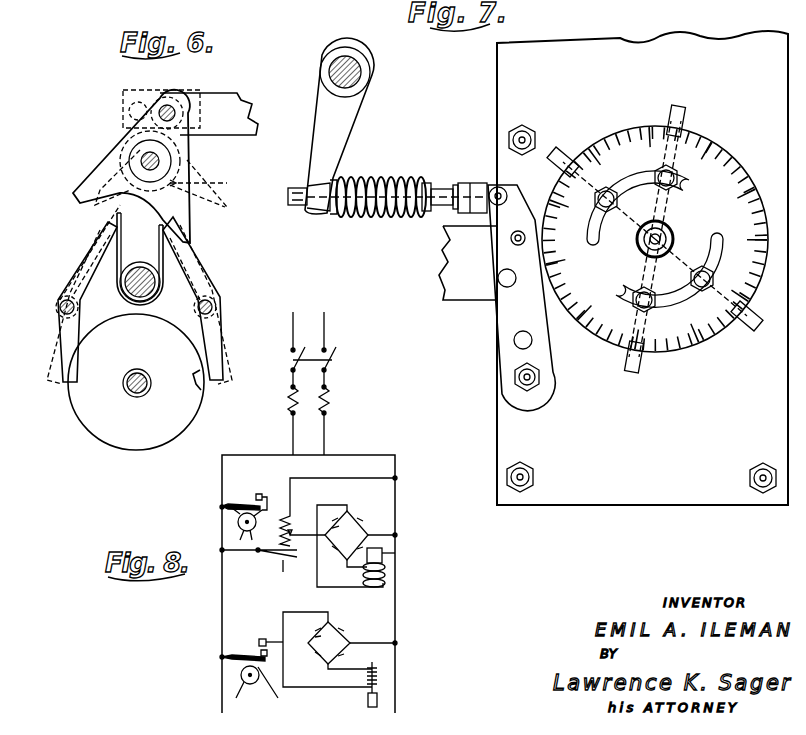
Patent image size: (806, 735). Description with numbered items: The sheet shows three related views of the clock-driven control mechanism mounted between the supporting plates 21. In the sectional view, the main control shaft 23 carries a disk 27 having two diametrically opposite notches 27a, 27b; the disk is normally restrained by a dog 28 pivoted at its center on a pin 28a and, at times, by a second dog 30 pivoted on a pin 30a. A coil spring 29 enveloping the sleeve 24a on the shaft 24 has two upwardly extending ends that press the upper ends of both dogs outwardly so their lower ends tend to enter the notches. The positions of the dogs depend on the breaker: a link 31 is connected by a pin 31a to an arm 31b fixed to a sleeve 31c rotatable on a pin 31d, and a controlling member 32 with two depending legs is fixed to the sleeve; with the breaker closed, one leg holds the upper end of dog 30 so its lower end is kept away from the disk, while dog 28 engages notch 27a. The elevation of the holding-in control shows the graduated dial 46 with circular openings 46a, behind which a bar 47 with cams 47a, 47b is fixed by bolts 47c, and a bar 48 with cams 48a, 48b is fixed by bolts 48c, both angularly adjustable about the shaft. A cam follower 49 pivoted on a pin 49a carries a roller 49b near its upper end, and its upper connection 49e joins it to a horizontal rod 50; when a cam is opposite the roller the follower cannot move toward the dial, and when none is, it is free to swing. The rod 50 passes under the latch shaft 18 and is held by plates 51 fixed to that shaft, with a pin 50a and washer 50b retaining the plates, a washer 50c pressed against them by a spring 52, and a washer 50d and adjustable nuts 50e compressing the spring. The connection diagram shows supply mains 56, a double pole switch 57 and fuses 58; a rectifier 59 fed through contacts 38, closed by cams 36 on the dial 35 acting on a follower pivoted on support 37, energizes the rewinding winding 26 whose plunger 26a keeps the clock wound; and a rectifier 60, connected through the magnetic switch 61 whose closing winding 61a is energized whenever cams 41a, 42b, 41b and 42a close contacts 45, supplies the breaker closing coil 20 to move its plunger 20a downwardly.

In FIG. 7, the latch shaft 18 is at (360, 74).
In FIG. 8, the closing coil 20 is at (383, 590).
In FIG. 8, the plunger 20a is at (388, 550).
In FIG. 7, the supporting plate 21 is at (732, 48).
In FIG. 6, the control shaft 23 is at (144, 372).
In FIG. 7, the control shaft 23 is at (666, 228).
In FIG. 6, the shaft 24 is at (154, 290).
In FIG. 6, the sleeve 24a is at (138, 300).
In FIG. 8, the solenoid winding 26 is at (383, 662).
In FIG. 8, the plunger 26a is at (368, 700).
In FIG. 6, the disk 27 is at (136, 382).
In FIG. 6, the notch 27a is at (70, 380).
In FIG. 6, the notch 27b is at (194, 375).
In FIG. 6, the dog 28 is at (88, 254).
In FIG. 6, the pin 28a is at (57, 307).
In FIG. 6, the coil spring 29 is at (120, 272).
In FIG. 6, the dog 30 is at (196, 272).
In FIG. 6, the pin 30a is at (216, 306).
In FIG. 6, the link 31 is at (240, 97).
In FIG. 6, the pin 31a is at (172, 108).
In FIG. 6, the arm 31b is at (187, 138).
In FIG. 6, the sleeve 31c is at (209, 186).
In FIG. 6, the pin 31d is at (160, 162).
In FIG. 6, the controlling member 32 is at (106, 175).
In FIG. 8, the dial 35 is at (247, 532).
In FIG. 8, the cam 36 is at (255, 691).
In FIG. 7, the support 37 is at (275, 13).
In FIG. 8, the contacts 38 is at (258, 650).
In FIG. 8, the cam 41a is at (222, 508).
In FIG. 8, the cam 41b is at (256, 552).
In FIG. 8, the cam 42a is at (240, 522).
In FIG. 8, the cam 42b is at (275, 500).
In FIG. 8, the contacts 45 is at (254, 500).
In FIG. 7, the dial 46 is at (738, 158).
In FIG. 7, the circular openings 46a is at (600, 234).
In FIG. 7, the bar 47 is at (694, 252).
In FIG. 7, the cam 47a is at (562, 152).
In FIG. 7, the cam 47b is at (750, 326).
In FIG. 7, the bolts 47c is at (622, 190).
In FIG. 7, the bar 48 is at (630, 280).
In FIG. 7, the cam 48a is at (680, 118).
In FIG. 7, the cam 48b is at (634, 366).
In FIG. 7, the bolts 48c is at (672, 172).
In FIG. 7, the cam follower 49 is at (520, 312).
In FIG. 7, the pin 49a is at (519, 377).
In FIG. 7, the roller 49b is at (512, 242).
In FIG. 7, the lever pivot 49e is at (503, 194).
In FIG. 7, the rod 50 is at (405, 185).
In FIG. 7, the pin 50a is at (296, 188).
In FIG. 7, the washer 50b is at (305, 214).
In FIG. 7, the washer 50c is at (340, 182).
In FIG. 7, the washer 50d is at (436, 214).
In FIG. 7, the adjustable nuts 50e is at (444, 183).
In FIG. 7, the plates 51 is at (340, 125).
In FIG. 7, the spring 52 is at (393, 217).
In FIG. 8, the supply mains 56 is at (324, 318).
In FIG. 8, the double pole switch 57 is at (342, 363).
In FIG. 8, the fuses 58 is at (288, 398).
In FIG. 8, the rectifier 59 is at (356, 620).
In FIG. 8, the rectifier 60 is at (371, 524).
In FIG. 8, the magnetic switch 61 is at (308, 531).
In FIG. 8, the closing winding 61a is at (286, 528).